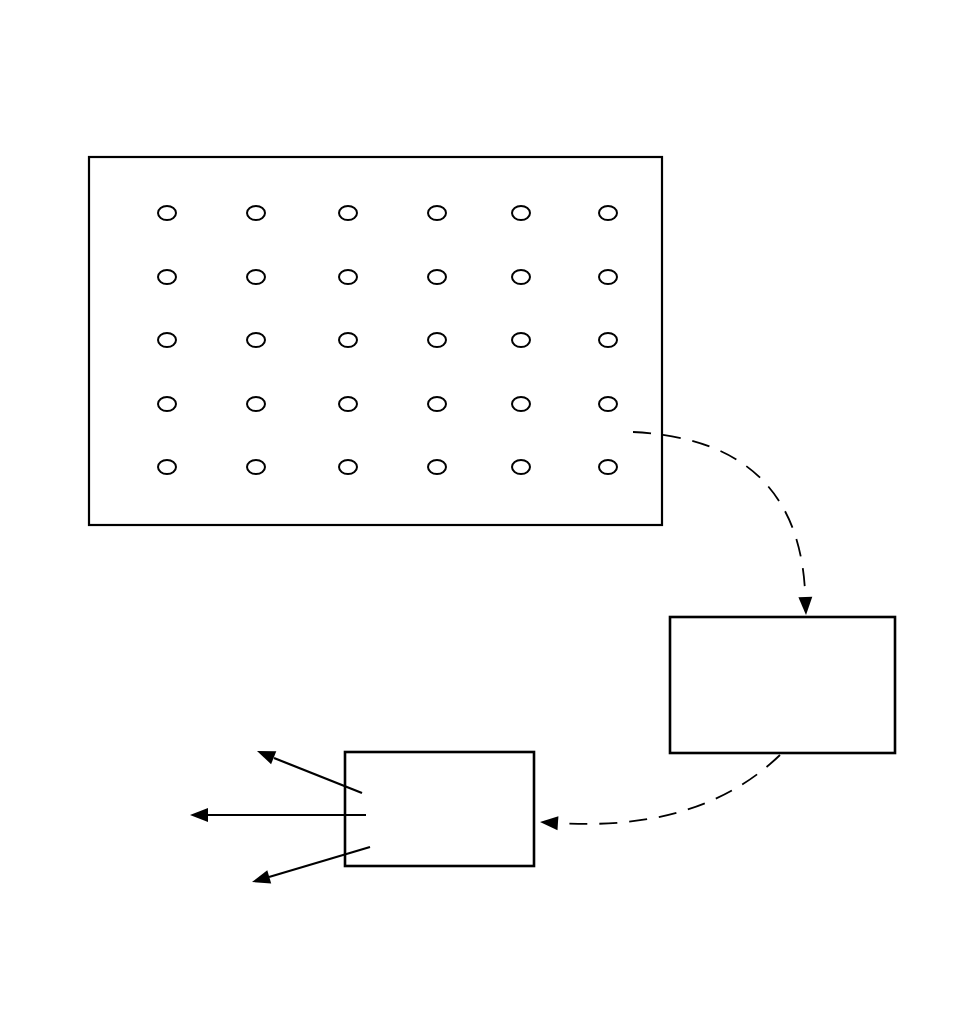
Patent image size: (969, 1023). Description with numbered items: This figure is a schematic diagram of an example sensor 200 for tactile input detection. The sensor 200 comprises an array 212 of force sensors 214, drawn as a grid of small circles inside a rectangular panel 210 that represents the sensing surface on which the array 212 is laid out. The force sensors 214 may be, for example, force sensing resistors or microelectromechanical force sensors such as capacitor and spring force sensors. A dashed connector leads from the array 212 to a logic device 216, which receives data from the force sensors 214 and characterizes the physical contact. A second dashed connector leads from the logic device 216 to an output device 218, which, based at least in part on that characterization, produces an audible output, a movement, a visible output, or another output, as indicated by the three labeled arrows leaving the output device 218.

The sensor 200 is at (115, 99).
The sensing surface / touch panel 210 is at (300, 510).
The array 212 is at (483, 520).
The force sensors 214 is at (347, 212).
The logic device 216 is at (685, 717).
The output device 218 is at (418, 770).